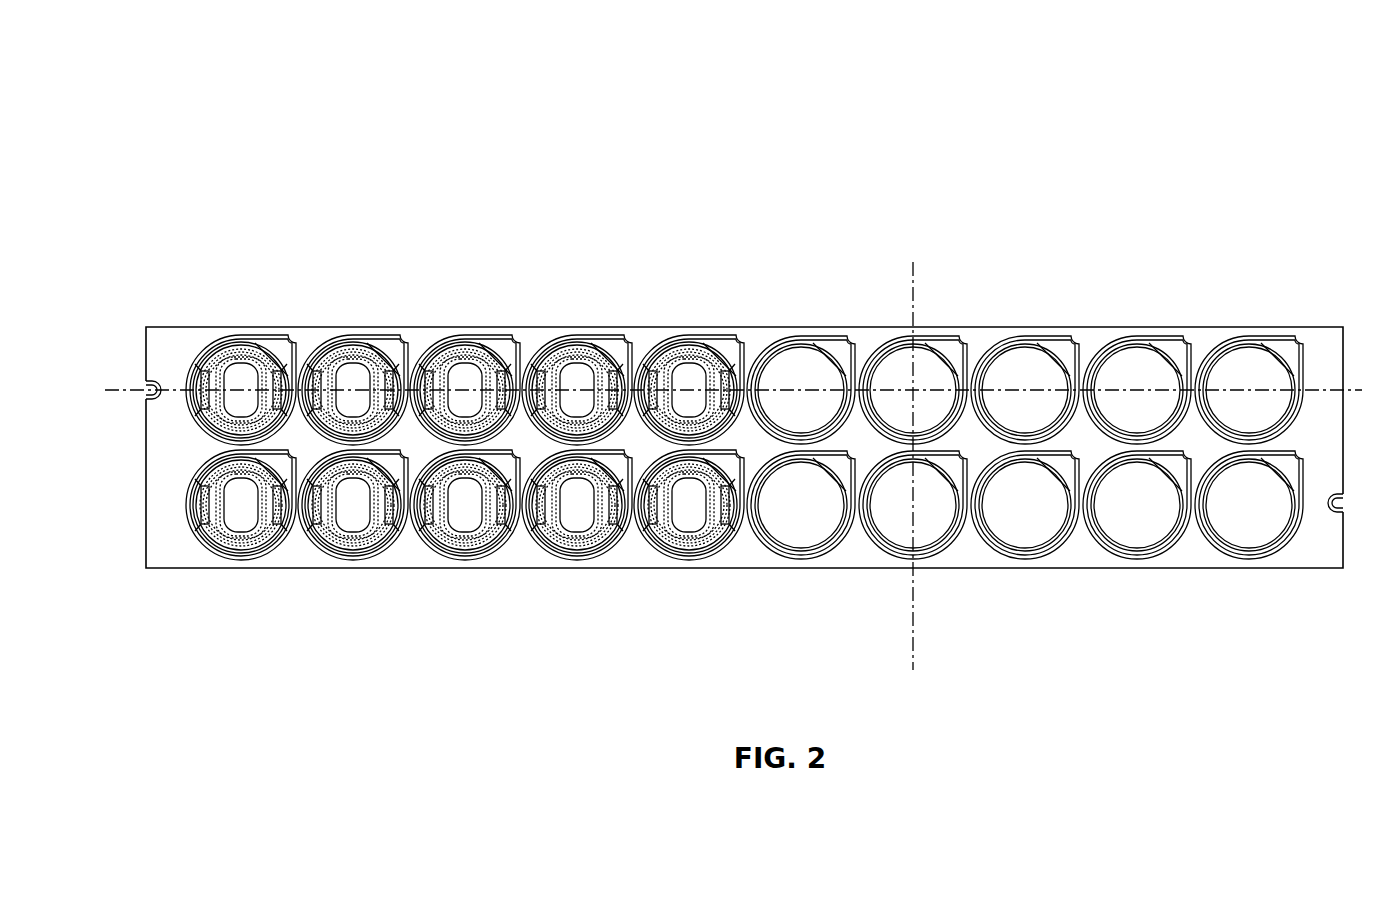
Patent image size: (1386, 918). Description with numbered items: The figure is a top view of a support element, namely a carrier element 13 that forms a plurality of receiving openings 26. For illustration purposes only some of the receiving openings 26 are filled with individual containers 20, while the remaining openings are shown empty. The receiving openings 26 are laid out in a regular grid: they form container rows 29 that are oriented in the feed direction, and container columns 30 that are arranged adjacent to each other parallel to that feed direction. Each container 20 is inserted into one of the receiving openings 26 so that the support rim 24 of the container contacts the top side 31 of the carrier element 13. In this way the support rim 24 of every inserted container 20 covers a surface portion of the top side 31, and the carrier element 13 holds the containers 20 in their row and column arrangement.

The carrier element 13 is at (1041, 197).
The container 20 is at (246, 382).
The support rim 24 is at (182, 364).
The receiving opening 26 is at (1023, 366).
The container row 29 is at (1357, 385).
The container column 30 is at (913, 653).
The top side 31 is at (518, 552).